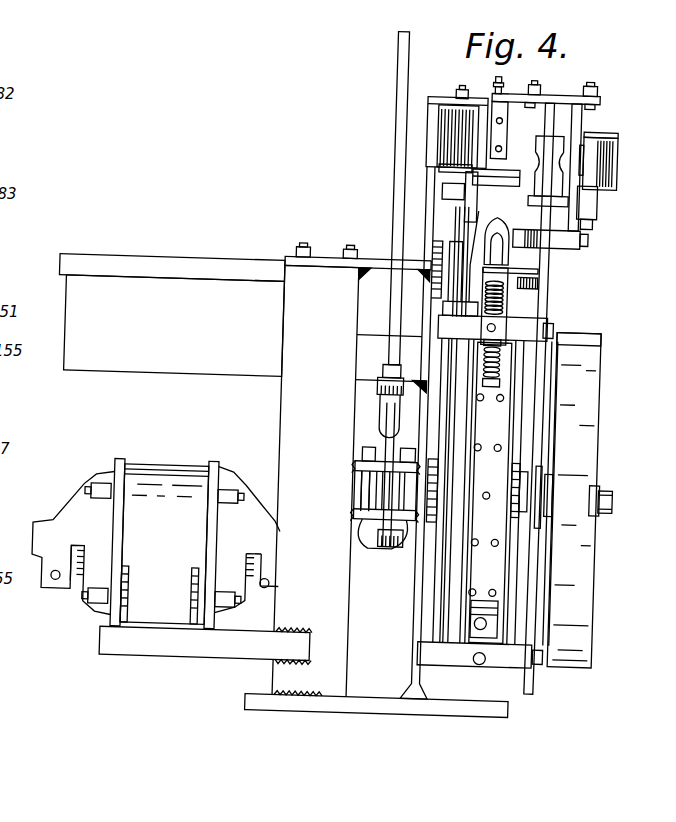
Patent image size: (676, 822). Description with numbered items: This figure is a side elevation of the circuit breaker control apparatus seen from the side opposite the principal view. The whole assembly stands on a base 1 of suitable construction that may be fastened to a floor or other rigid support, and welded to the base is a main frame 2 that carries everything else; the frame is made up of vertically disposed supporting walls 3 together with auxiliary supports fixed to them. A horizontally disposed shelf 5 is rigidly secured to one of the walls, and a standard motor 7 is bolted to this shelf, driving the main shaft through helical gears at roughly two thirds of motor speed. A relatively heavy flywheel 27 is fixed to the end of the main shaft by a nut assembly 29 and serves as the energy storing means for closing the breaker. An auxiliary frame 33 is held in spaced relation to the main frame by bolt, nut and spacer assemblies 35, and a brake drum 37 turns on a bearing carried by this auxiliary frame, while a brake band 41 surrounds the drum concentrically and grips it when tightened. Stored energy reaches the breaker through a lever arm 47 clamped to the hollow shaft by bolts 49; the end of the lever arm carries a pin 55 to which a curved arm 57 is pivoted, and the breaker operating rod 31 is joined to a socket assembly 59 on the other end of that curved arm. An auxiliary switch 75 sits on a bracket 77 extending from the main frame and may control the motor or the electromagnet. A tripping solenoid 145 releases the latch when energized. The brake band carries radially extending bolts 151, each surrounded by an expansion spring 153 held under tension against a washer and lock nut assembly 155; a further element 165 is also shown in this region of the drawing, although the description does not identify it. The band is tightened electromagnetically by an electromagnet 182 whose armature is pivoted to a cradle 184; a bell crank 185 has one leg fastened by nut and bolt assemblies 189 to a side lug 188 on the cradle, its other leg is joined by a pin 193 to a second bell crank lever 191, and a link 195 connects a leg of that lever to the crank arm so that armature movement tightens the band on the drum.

The base 1 is at (395, 705).
The main frame 2 is at (274, 674).
The supporting walls 3 is at (418, 626).
The shelf 5 is at (204, 652).
The motor 7 is at (84, 487).
The flywheel 27 is at (580, 572).
The nut assembly 29 is at (604, 487).
The breaker operating rod 31 is at (398, 141).
The auxiliary frame 33 is at (545, 297).
The bolt, nut and spacer assemblies 35 is at (544, 665).
The brake drum 37 is at (510, 422).
The brake band 41 is at (493, 465).
The lever arm 47 is at (402, 530).
The bolts 49 is at (403, 450).
The pin 55 is at (364, 532).
The curved arm 57 is at (387, 439).
The socket assembly 59 is at (380, 400).
The auxiliary switch 75 is at (146, 367).
The bracket 77 is at (377, 263).
The tripping solenoid 145 is at (440, 117).
The bolts 151 is at (560, 352).
The expansion spring 153 is at (515, 384).
The washer and lock nut assembly 155 is at (520, 368).
The spring 165 is at (510, 281).
The electromagnet 182 is at (612, 157).
The cradle 184 is at (585, 235).
The bell crank 185 is at (510, 196).
The side lug 188 is at (510, 206).
The nut and bolt assemblies 189 is at (526, 178).
The second bell crank lever 191 is at (462, 301).
The pin 193 is at (455, 238).
The link 195 is at (448, 214).